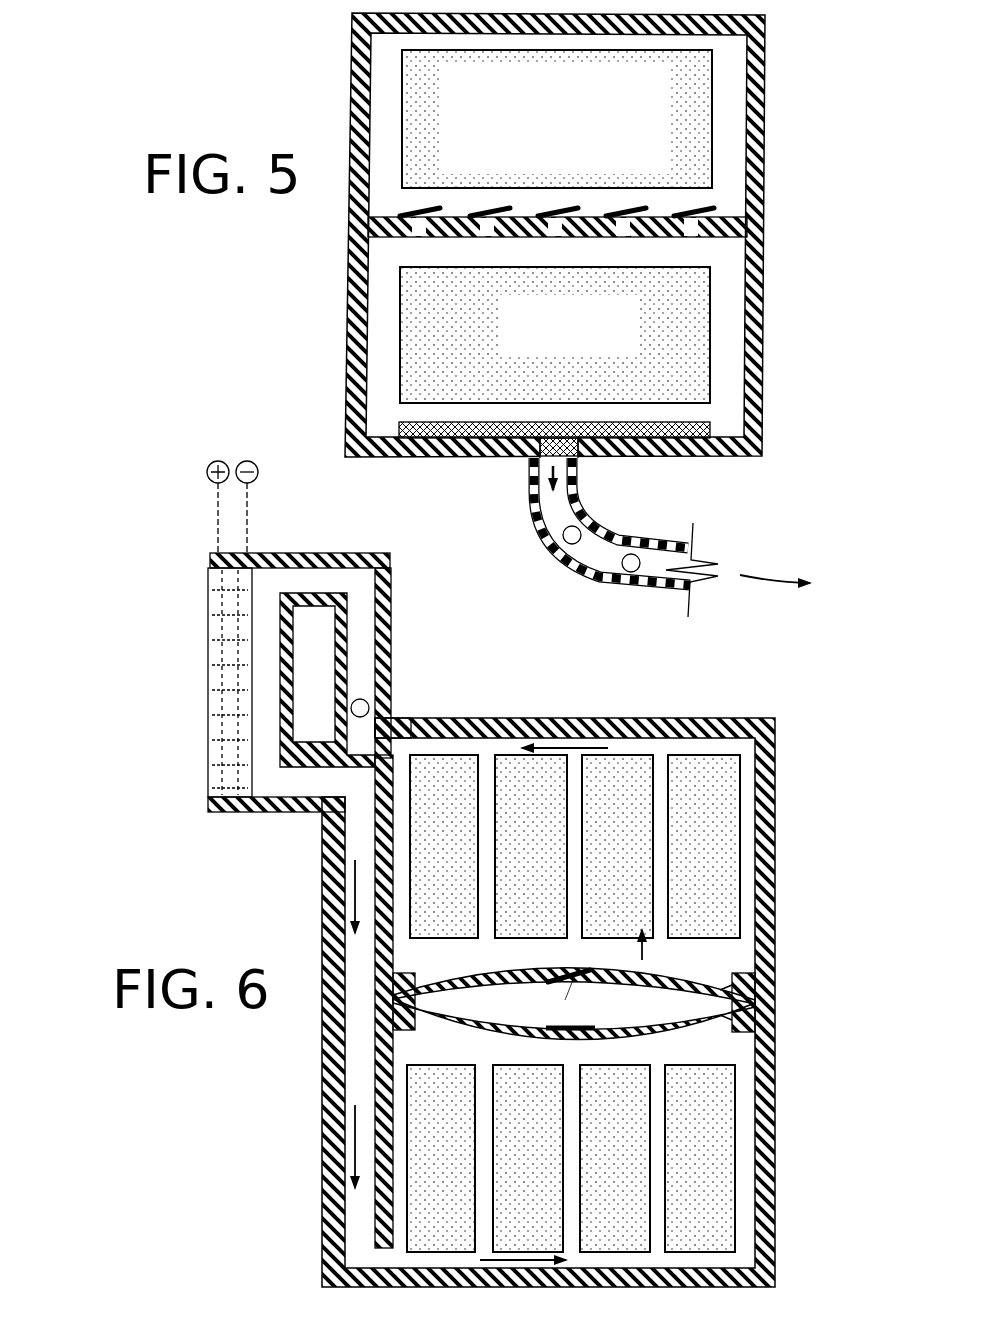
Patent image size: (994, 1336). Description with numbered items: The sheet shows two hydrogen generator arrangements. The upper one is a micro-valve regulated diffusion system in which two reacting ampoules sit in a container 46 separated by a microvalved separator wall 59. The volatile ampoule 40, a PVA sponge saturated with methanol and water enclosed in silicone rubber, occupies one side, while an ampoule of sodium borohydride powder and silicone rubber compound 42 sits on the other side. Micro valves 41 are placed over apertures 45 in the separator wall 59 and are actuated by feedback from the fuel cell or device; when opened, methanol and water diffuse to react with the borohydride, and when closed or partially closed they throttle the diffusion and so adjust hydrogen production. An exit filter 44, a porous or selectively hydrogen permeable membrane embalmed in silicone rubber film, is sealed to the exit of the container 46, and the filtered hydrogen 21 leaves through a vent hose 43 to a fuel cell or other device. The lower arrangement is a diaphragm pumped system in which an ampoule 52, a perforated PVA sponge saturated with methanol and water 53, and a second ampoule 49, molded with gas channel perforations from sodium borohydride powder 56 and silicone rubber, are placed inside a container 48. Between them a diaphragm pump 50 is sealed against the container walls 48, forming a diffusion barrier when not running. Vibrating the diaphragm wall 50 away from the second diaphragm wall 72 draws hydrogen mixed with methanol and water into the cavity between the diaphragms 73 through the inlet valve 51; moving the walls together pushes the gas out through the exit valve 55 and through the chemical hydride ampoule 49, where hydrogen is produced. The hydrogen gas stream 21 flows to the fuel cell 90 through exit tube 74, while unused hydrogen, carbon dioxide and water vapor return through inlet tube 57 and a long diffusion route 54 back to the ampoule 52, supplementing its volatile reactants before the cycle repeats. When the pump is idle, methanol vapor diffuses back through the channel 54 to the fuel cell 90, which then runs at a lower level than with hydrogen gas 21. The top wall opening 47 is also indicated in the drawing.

In FIG. 5, the hydrogen gas 21 is at (922, 582).
In FIG. 6, the hydrogen gas 21 is at (372, 707).
In FIG. 5, the volatile ampoule 40 is at (697, 115).
In FIG. 5, the micro valves 41 is at (720, 210).
In FIG. 5, the sodium borohydride and silicone rubber ampoule 42 is at (668, 345).
In FIG. 5, the vent hose 43 is at (692, 585).
In FIG. 5, the exit filter 44 is at (400, 428).
In FIG. 5, the apertures 45 is at (422, 234).
In FIG. 5, the container 46 is at (350, 113).
In FIG. 5, the separator wall 59 is at (722, 244).
In FIG. 6, the inlet opening of top wall 47 is at (452, 722).
In FIG. 6, the container 48 is at (775, 735).
In FIG. 6, the second ampoule 49 is at (715, 905).
In FIG. 6, the diaphragm pump 50 is at (575, 1022).
In FIG. 6, the inlet valve 51 is at (742, 1034).
In FIG. 6, the ampoule 52 is at (705, 1190).
In FIG. 6, the methanol and water 53 is at (78, 1191).
In FIG. 6, the long diffusion route 54 is at (355, 1063).
In FIG. 6, the exit valve 55 is at (358, 940).
In FIG. 6, the sodium borohydride powder 56 is at (130, 764).
In FIG. 6, the inlet tube 57 is at (265, 770).
In FIG. 6, the second diaphragm wall 72 is at (740, 1039).
In FIG. 6, the cavity between the diaphragms 73 is at (620, 1003).
In FIG. 6, the exit tube 74 is at (363, 583).
In FIG. 6, the fuel cell 90 is at (273, 645).